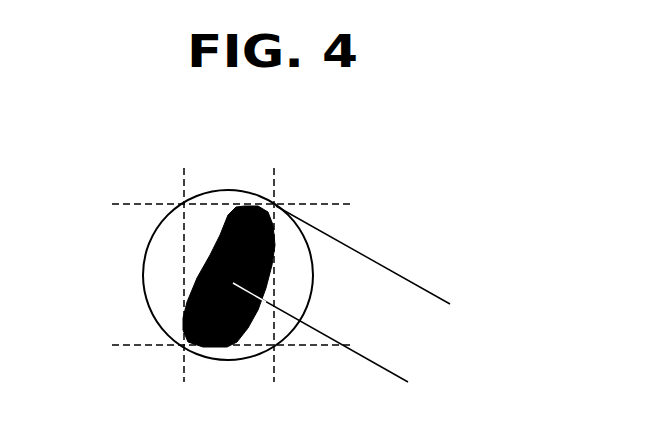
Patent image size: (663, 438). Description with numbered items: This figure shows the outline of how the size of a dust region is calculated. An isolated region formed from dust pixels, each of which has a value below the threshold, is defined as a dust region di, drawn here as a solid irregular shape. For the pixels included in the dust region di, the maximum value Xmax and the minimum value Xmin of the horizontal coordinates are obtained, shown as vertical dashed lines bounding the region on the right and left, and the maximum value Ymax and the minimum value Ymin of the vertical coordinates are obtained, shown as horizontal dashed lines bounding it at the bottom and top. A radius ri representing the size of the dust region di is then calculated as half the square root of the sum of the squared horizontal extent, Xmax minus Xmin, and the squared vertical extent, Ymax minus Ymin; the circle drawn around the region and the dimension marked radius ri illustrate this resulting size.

The dust region di is at (230, 312).
The radius ri is at (433, 297).
The minimum value of horizontal coordinates Xmin is at (184, 258).
The maximum value of horizontal coordinates Xmax is at (273, 258).
The minimum value of vertical coordinates Ymin is at (203, 203).
The maximum value of vertical coordinates Ymax is at (200, 341).